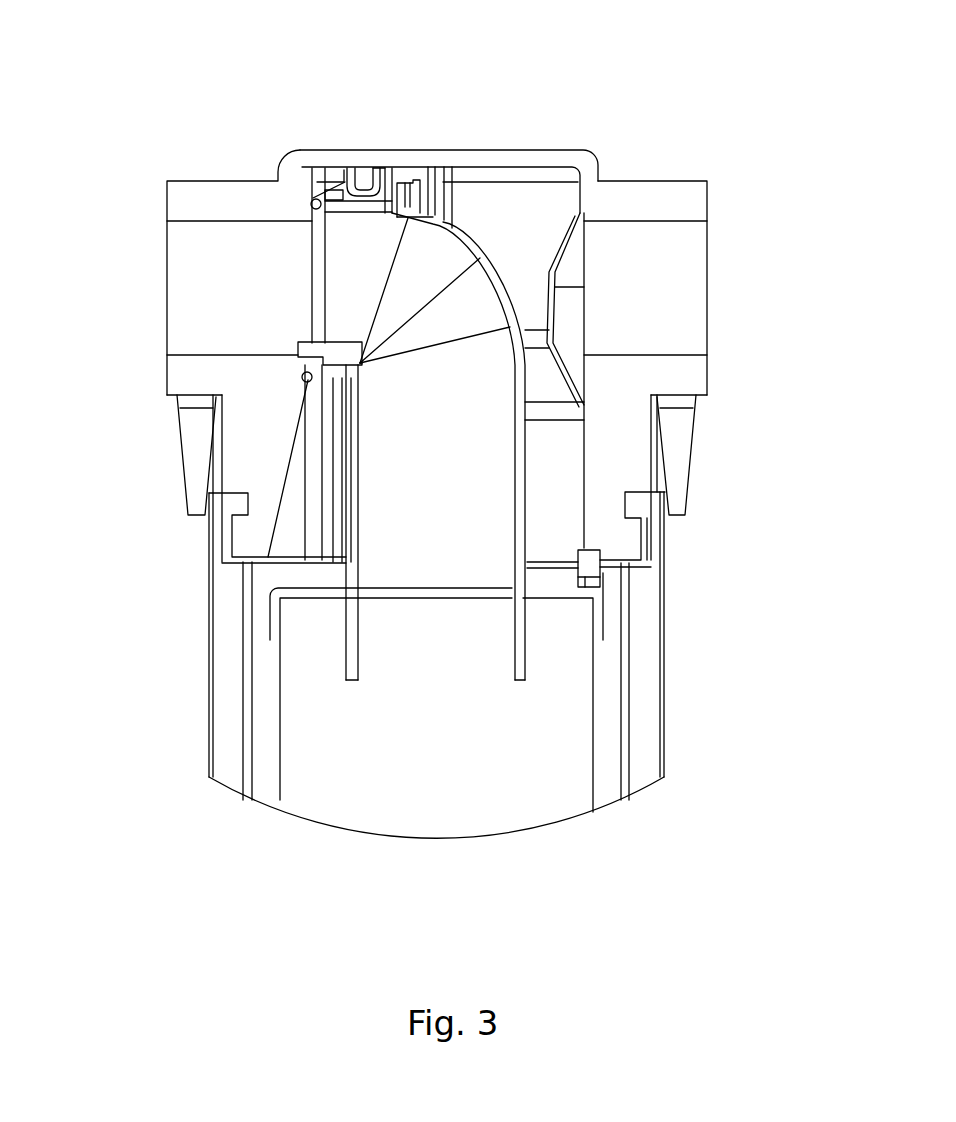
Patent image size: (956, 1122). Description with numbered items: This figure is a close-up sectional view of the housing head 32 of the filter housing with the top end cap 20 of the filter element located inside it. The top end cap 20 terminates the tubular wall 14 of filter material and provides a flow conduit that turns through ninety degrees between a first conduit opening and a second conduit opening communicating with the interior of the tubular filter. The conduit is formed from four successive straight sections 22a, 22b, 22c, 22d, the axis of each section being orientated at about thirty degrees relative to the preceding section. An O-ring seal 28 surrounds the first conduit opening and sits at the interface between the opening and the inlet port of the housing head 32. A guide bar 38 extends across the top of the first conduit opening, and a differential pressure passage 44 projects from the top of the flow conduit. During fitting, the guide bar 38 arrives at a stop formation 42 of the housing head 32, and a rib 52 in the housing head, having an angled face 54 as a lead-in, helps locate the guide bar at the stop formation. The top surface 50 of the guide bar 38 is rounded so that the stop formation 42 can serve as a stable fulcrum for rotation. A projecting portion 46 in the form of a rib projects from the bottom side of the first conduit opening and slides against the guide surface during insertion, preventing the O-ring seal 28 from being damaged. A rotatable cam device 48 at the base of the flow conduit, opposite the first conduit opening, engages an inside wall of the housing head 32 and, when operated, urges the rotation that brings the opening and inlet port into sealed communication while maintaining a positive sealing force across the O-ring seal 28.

The tubular wall 14 is at (279, 770).
The top end cap 20 is at (533, 297).
The first straight section 22a is at (376, 276).
The second straight section 22b is at (438, 296).
The third straight section 22c is at (478, 334).
The fourth straight section 22d is at (478, 394).
The O-ring seal 28 is at (302, 376).
The housing head 32 is at (518, 148).
The guide bar 38 is at (311, 193).
The stop formation 42 is at (329, 165).
The differential pressure passage 44 is at (407, 183).
The projecting portion 46 is at (300, 335).
The rotatable cam device 48 is at (614, 575).
The top surface 50 is at (314, 164).
The rib 52 is at (383, 155).
The angled face 54 is at (360, 182).